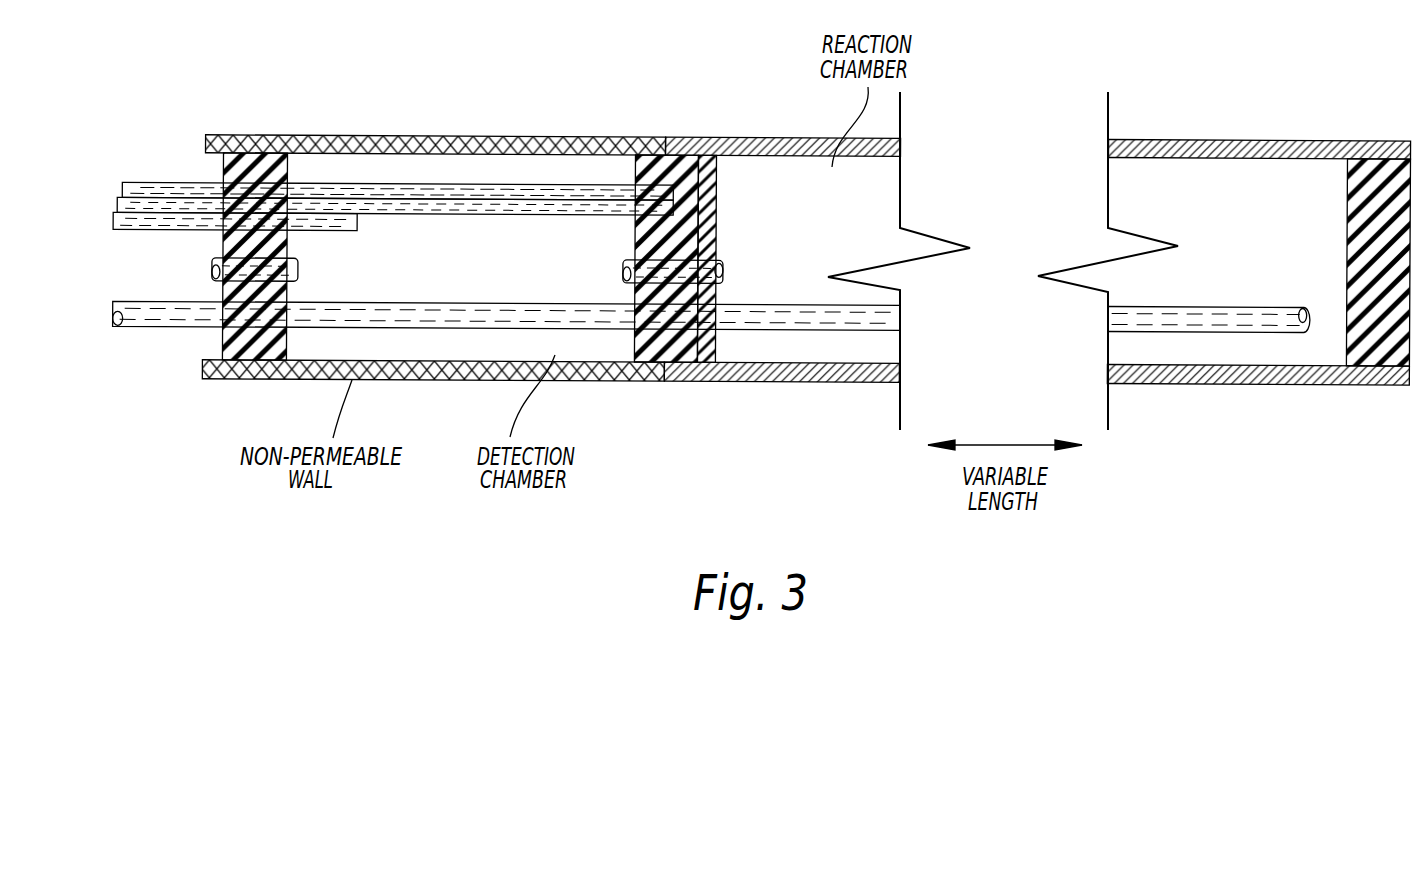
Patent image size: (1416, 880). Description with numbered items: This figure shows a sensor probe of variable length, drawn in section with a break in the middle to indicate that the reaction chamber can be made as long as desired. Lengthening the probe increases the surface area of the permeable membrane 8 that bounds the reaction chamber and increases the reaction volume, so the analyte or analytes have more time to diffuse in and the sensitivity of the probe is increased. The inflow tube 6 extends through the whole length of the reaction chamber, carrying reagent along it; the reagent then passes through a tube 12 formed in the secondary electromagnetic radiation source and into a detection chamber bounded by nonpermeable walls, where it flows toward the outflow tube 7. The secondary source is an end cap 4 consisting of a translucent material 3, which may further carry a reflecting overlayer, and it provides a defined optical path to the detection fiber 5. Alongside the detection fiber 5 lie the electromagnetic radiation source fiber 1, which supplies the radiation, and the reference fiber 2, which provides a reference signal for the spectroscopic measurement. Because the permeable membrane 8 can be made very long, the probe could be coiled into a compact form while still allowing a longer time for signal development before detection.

The electromagnetic radiation source fiber 1 is at (118, 232).
The reference fiber 2 is at (142, 190).
The translucent material 3 is at (257, 163).
The end cap 4 is at (708, 160).
The detection fiber 5 is at (123, 206).
The inflow tube 6 is at (483, 310).
The outflow tube 7 is at (298, 277).
The permeable membrane 8 is at (1210, 143).
The tube 12 is at (723, 272).